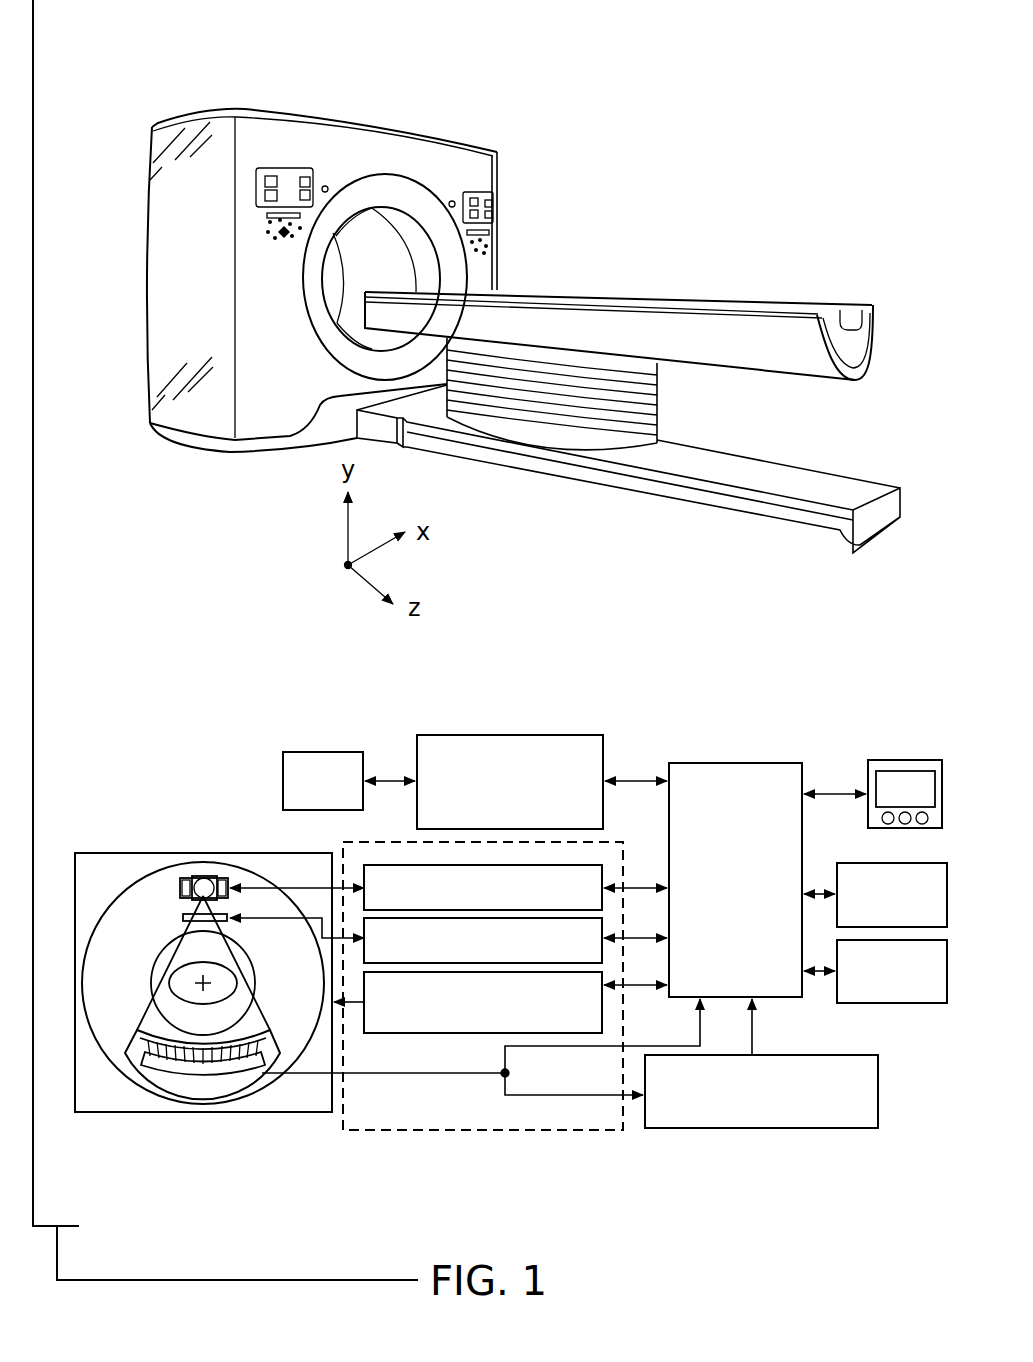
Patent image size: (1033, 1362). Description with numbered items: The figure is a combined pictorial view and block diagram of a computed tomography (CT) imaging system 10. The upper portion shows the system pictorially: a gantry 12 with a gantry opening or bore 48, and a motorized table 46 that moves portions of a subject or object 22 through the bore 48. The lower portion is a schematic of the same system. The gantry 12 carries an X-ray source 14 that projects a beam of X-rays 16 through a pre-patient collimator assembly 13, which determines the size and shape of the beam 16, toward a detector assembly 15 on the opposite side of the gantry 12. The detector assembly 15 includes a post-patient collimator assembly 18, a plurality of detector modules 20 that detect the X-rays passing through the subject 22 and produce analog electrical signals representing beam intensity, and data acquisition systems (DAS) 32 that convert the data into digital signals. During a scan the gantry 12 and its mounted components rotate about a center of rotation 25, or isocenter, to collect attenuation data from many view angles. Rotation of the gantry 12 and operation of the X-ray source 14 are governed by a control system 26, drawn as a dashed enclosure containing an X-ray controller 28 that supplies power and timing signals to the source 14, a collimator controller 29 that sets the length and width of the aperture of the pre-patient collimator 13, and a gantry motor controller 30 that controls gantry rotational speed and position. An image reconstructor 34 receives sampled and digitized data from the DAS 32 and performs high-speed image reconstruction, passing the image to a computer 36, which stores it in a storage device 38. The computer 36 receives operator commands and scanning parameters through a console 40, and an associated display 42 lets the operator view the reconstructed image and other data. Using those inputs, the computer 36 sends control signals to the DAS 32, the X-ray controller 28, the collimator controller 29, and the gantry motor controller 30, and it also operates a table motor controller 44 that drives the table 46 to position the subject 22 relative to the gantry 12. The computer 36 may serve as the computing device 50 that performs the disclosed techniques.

The computed tomography (CT) imaging system 10 is at (614, 42).
The gantry 12 is at (423, 165).
The pre-patient collimator assembly 13 is at (184, 914).
The X-ray source 14 is at (205, 876).
The detector assembly 15 is at (126, 1041).
The beam of X-rays 16 is at (155, 1018).
The collimator assembly 18 is at (264, 1032).
The detector modules 20 is at (231, 1060).
The subject or object 22 is at (183, 962).
The center of rotation 25 is at (208, 981).
The control system 26 is at (360, 1148).
The X-ray controller 28 is at (603, 868).
The collimator controller 29 is at (603, 931).
The gantry motor controller 30 is at (603, 1008).
The data acquisition systems (DAS) 32 is at (160, 1070).
The image reconstructor 34 is at (758, 1130).
The computer 36 is at (734, 763).
The storage device 38 is at (890, 1003).
The console 40 is at (856, 863).
The display 42 is at (910, 760).
The table motor controller 44 is at (509, 735).
The motorized table 46 is at (618, 326).
The gantry opening or bore 48 is at (333, 288).
The computing device 50 is at (378, 242).